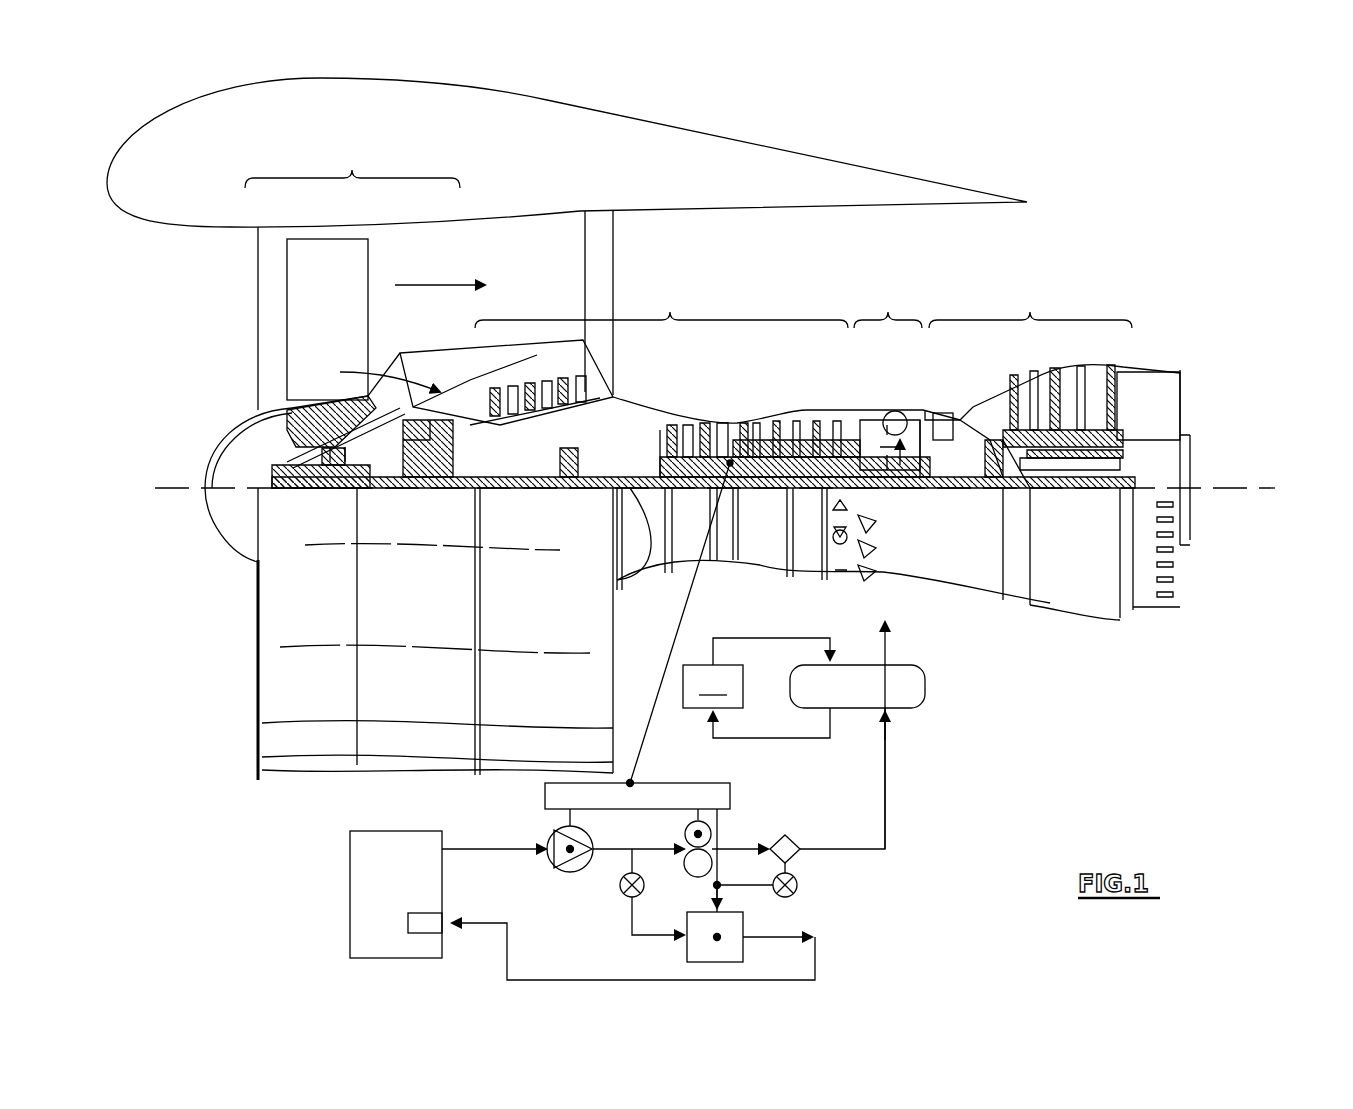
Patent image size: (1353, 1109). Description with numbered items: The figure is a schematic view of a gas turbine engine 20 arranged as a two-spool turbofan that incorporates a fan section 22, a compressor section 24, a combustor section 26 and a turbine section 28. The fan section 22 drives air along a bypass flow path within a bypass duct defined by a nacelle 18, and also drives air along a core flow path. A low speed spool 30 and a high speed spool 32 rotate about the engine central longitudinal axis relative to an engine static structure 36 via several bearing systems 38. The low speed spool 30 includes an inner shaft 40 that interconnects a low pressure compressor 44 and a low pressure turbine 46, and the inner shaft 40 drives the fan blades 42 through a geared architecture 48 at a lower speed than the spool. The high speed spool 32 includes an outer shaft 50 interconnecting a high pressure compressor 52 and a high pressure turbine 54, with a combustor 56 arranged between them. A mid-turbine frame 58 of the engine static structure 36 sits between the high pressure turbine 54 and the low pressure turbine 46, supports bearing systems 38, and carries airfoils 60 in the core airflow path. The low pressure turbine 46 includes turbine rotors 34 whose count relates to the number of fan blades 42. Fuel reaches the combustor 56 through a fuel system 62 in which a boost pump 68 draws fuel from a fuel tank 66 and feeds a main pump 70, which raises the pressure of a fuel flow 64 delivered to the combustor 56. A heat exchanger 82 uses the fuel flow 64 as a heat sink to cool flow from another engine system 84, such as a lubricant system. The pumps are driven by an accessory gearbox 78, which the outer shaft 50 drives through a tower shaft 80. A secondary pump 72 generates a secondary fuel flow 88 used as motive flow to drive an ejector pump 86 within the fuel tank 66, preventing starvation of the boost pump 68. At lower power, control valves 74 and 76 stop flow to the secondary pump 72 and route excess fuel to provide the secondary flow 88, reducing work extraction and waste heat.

The nacelle 18 is at (562, 128).
The gas turbine engine 20 is at (1080, 128).
The fan section 22 is at (352, 164).
The compressor section 24 is at (661, 307).
The combustor section 26 is at (888, 307).
The turbine section 28 is at (1030, 307).
The low speed spool 30 is at (768, 500).
The high speed spool 32 is at (800, 440).
The turbine rotors 34 is at (1090, 470).
The engine static structure 36 is at (805, 578).
The bearing systems 38 is at (335, 488).
The inner shaft 40 is at (640, 580).
The fan blades 42 is at (340, 337).
The low pressure compressor 44 is at (548, 392).
The low pressure turbine 46 is at (1068, 385).
The geared architecture 48 is at (443, 488).
The outer shaft 50 is at (910, 488).
The high pressure compressor 52 is at (745, 422).
The high pressure turbine 54 is at (945, 410).
The combustor 56 is at (883, 430).
The mid-turbine frame 58 is at (983, 400).
The airfoils 60 is at (1020, 480).
The fuel system 62 is at (982, 805).
The fuel flow 64 is at (888, 770).
The fuel tank 66 is at (350, 915).
The boost pump 68 is at (565, 870).
The main pump 70 is at (684, 833).
The secondary pump 72 is at (690, 950).
The control valve 74 is at (625, 897).
The control valve 76 is at (797, 885).
The accessory gearbox 78 is at (545, 795).
The tower shaft 80 is at (672, 648).
The heat exchanger 82 is at (920, 690).
The engine system 84 is at (756, 688).
The ejector pump 86 is at (425, 930).
The secondary fuel flow 88 is at (818, 957).